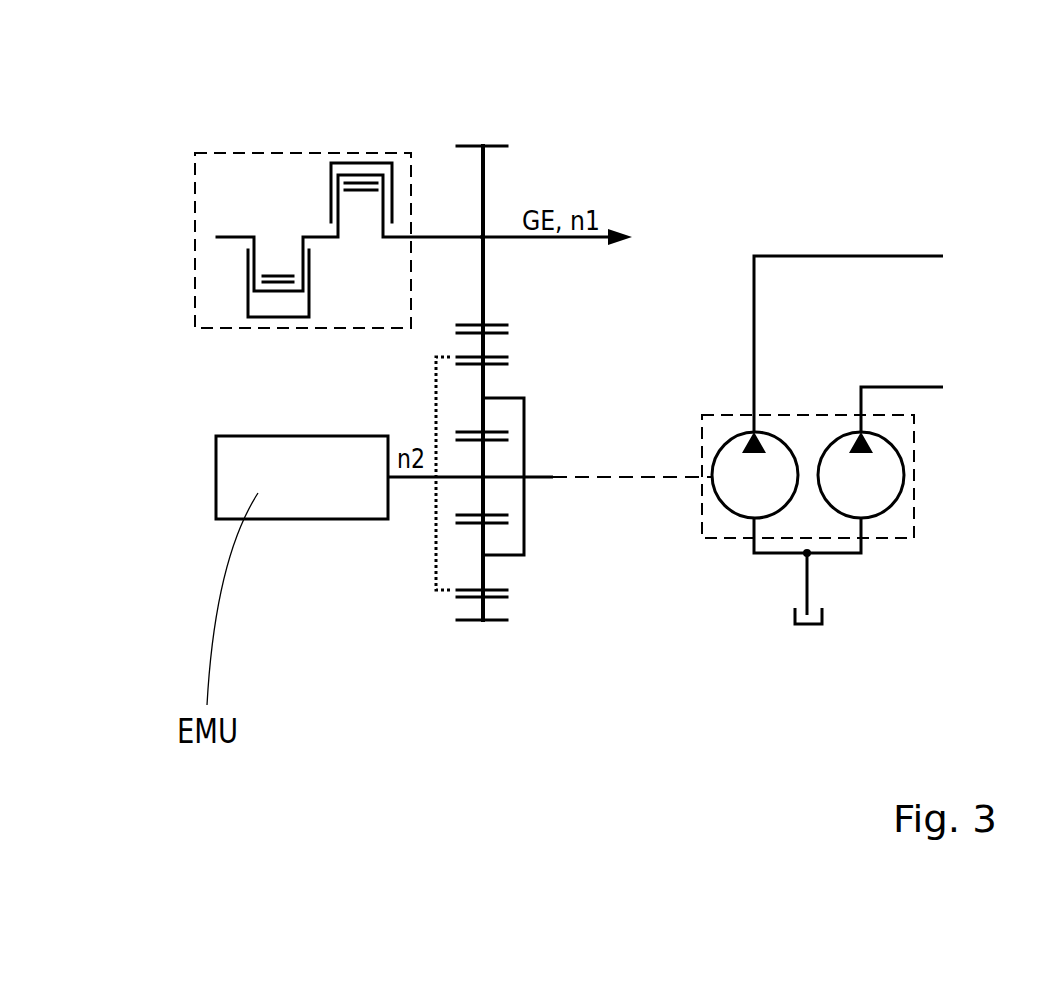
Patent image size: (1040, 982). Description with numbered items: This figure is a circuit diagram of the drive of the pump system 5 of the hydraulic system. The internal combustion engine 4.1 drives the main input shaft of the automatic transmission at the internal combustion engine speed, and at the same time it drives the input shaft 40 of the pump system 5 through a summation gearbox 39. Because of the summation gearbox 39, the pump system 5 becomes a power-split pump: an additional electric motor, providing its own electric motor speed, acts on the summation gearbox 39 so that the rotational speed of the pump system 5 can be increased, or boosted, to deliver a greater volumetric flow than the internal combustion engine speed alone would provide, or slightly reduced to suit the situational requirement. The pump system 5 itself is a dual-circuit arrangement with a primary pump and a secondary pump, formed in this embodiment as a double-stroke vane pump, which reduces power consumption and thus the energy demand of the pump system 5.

The internal combustion engine 4.1 is at (233, 182).
The summation gearbox 39 is at (524, 346).
The input shaft 40 is at (595, 477).
The pump system 5 is at (693, 560).